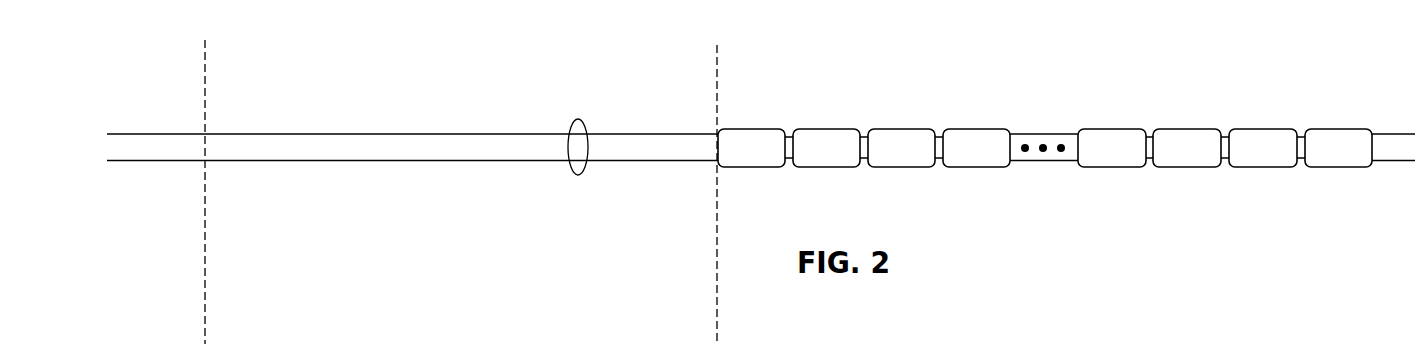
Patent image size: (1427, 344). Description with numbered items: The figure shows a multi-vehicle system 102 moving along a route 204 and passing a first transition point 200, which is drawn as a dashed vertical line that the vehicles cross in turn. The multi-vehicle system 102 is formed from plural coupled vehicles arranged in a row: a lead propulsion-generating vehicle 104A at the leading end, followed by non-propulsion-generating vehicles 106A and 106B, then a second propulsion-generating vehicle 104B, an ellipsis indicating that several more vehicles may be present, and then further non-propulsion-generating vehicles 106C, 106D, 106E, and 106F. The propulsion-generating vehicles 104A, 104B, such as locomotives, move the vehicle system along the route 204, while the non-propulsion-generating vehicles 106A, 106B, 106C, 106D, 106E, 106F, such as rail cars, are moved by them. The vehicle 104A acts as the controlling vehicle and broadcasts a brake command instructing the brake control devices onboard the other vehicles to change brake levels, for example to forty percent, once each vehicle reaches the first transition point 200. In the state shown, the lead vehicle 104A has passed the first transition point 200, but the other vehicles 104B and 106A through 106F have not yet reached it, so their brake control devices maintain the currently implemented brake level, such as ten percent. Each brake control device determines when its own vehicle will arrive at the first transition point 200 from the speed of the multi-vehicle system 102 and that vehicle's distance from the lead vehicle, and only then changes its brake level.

The first transition point 200 is at (717, 95).
The route 204 is at (571, 128).
The multi-vehicle system 102 is at (1060, 156).
The propulsion-generating vehicle 104A is at (750, 129).
The propulsion-generating vehicle 104B is at (978, 129).
The non-propulsion-generating vehicle 106A is at (825, 129).
The non-propulsion-generating vehicle 106B is at (902, 129).
The non-propulsion-generating vehicle 106C is at (1110, 129).
The non-propulsion-generating vehicle 106D is at (1188, 129).
The non-propulsion-generating vehicle 106E is at (1263, 129).
The non-propulsion-generating vehicle 106F is at (1338, 129).